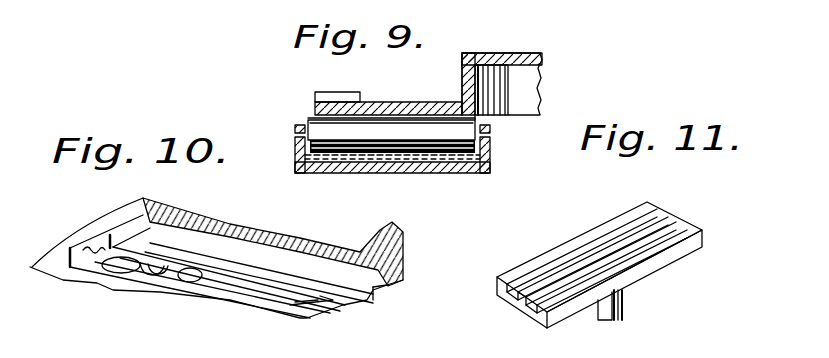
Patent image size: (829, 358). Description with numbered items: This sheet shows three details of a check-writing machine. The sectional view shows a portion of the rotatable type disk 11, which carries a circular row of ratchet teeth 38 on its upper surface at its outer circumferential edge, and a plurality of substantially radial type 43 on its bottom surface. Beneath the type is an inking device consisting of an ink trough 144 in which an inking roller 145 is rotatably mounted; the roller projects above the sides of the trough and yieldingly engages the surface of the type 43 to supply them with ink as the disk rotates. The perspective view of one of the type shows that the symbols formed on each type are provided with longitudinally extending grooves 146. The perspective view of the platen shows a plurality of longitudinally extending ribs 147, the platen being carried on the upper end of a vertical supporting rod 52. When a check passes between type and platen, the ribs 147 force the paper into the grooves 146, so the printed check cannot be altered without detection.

In FIG. 9, the ratchet teeth 38 is at (338, 92).
In FIG. 9, the rotatable type disk 11 is at (380, 101).
In FIG. 9, the type 43 is at (428, 120).
In FIG. 9, the ink trough 144 is at (492, 150).
In FIG. 9, the inking roller 145 is at (442, 140).
In FIG. 10, the grooves 146 is at (225, 282).
In FIG. 11, the ribs 147 is at (660, 204).
In FIG. 11, the supporting rod 52 is at (623, 300).